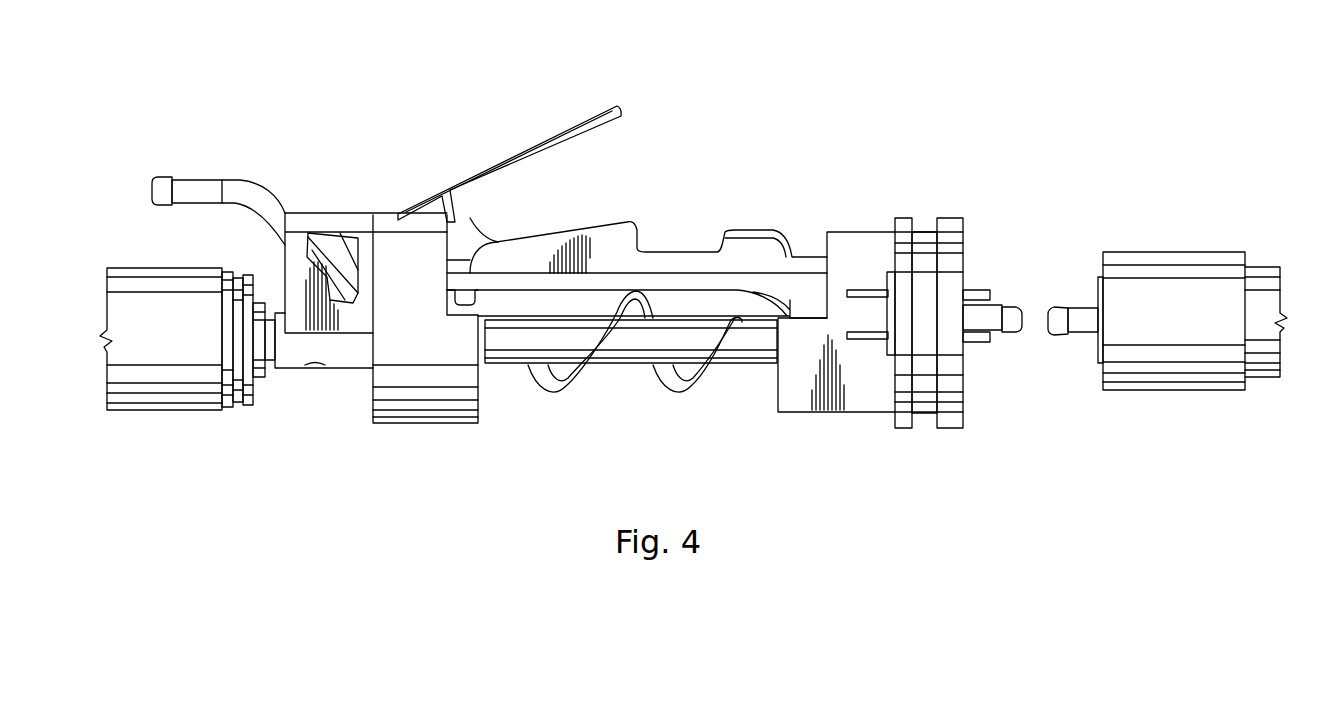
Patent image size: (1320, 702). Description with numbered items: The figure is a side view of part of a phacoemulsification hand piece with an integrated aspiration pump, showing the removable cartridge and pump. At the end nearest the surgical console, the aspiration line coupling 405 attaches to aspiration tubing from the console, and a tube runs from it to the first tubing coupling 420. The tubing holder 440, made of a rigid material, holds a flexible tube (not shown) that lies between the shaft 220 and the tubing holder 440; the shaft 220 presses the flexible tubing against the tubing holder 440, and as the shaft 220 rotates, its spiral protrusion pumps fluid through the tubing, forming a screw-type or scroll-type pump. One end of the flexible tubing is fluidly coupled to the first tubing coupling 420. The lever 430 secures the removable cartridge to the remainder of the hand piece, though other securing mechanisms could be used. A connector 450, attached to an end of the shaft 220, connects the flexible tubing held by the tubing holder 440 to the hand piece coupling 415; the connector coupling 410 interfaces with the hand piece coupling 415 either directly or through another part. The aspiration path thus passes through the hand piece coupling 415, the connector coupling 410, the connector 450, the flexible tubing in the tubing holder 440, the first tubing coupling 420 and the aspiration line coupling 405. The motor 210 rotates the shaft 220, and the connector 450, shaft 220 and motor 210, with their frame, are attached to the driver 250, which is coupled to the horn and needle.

The motor 210 is at (160, 412).
The shaft 220 is at (633, 365).
The driver 250 is at (1180, 390).
The aspiration line coupling 405 is at (207, 177).
The connector coupling 410 is at (998, 300).
The hand piece coupling 415 is at (1080, 305).
The first tubing coupling 420 is at (468, 305).
The lever 430 is at (572, 130).
The tubing holder 440 is at (805, 268).
The connector 450 is at (900, 430).